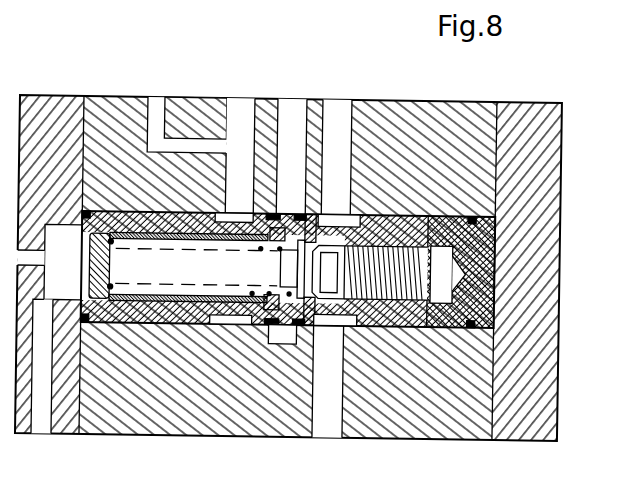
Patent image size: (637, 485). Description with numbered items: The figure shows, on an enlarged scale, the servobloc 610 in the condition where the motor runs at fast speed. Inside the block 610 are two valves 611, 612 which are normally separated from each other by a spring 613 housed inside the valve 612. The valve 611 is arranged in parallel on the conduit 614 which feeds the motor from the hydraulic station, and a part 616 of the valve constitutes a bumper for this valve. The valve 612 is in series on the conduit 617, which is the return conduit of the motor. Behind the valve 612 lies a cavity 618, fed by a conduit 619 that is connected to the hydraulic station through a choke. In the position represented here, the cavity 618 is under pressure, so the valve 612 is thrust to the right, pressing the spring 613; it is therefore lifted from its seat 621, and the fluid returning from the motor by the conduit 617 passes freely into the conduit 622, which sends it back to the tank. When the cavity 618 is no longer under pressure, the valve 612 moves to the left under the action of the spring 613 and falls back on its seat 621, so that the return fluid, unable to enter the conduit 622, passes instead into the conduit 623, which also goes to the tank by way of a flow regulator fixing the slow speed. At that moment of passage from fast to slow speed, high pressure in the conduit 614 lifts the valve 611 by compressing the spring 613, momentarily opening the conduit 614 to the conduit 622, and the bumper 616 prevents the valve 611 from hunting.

The servobloc 610 is at (555, 189).
The valve 611 is at (370, 272).
The valve 612 is at (265, 288).
The spring 613 is at (152, 283).
The conduit 614 is at (334, 436).
The bumper 616 is at (430, 226).
The conduit 617 is at (247, 96).
The cavity 618 is at (68, 271).
The conduit 619 is at (53, 432).
The seat 621 is at (253, 209).
The conduit 622 is at (305, 95).
The conduit 623 is at (163, 95).